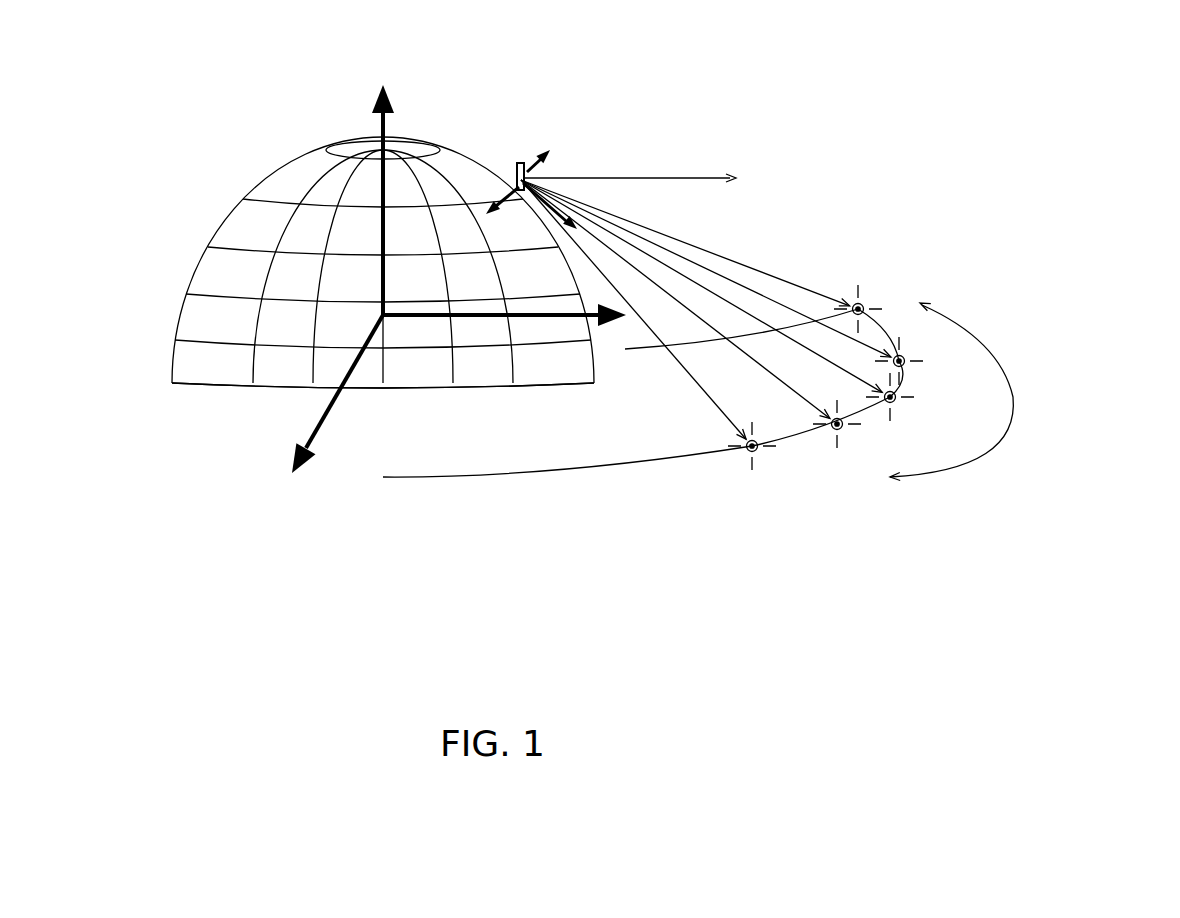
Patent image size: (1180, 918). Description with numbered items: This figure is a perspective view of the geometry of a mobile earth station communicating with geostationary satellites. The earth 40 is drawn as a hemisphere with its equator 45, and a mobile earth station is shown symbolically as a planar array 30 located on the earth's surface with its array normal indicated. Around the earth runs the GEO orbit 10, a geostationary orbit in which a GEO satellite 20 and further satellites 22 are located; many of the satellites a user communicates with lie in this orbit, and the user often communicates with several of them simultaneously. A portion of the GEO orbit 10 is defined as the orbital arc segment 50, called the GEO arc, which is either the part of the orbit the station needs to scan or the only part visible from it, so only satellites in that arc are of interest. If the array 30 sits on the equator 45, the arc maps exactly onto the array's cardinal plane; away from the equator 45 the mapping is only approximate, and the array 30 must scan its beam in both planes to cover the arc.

The earth 40 is at (276, 155).
The equator 45 is at (373, 402).
The planar array 30 is at (531, 157).
The GEO orbit 10 is at (522, 502).
The GEO satellite 20 is at (769, 459).
The satellite 22 is at (870, 298).
The orbital arc segment 50 is at (997, 320).